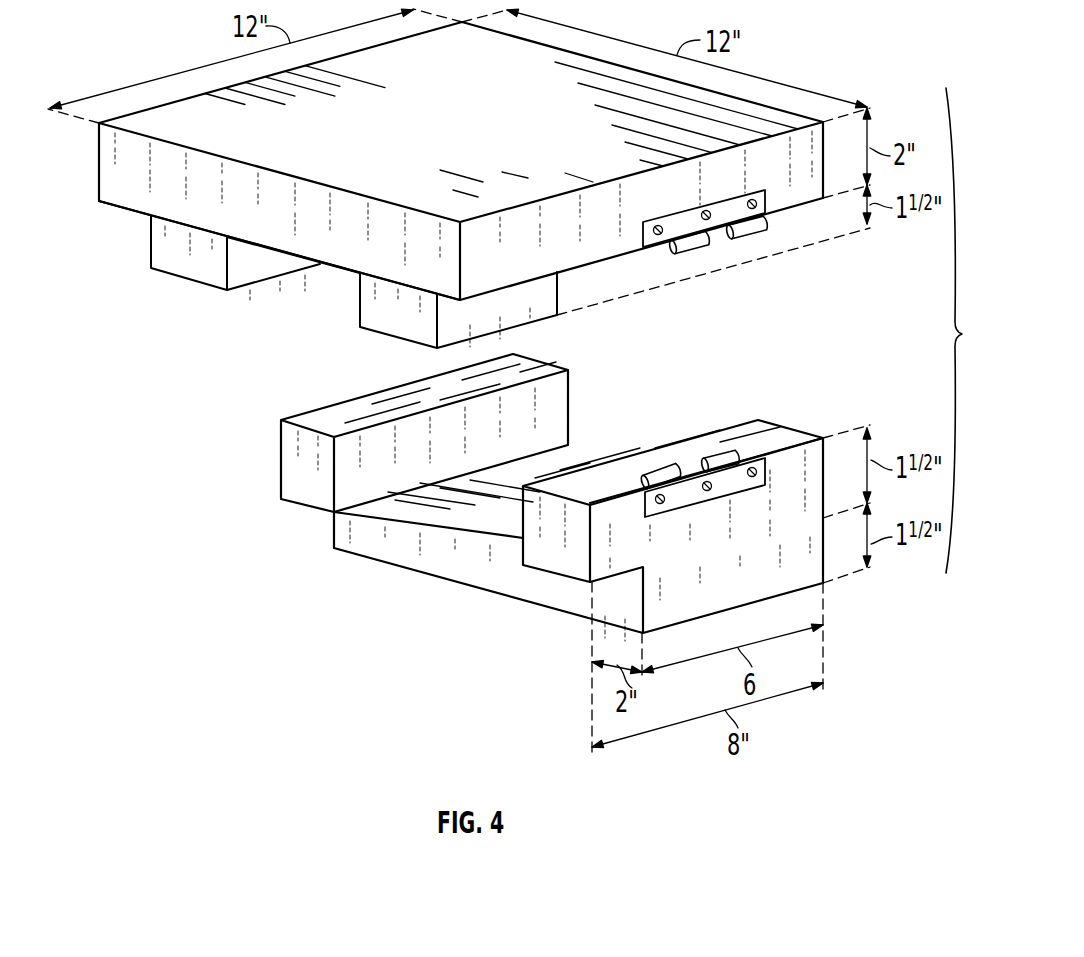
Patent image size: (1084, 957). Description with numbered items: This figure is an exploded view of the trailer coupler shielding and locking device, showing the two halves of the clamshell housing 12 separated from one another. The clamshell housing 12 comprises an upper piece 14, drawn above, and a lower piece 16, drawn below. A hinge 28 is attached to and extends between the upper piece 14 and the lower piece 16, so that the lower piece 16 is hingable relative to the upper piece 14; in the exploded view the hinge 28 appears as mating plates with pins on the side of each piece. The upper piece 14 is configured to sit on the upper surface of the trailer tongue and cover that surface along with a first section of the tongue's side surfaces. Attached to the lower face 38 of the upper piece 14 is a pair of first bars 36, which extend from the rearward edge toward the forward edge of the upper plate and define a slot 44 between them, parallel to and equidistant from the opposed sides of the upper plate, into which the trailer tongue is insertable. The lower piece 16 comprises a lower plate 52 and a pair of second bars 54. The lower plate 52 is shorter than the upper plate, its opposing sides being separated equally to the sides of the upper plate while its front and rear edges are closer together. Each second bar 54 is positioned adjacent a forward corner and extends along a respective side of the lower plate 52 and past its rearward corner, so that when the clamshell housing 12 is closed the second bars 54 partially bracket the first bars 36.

The clamshell housing 12 is at (833, 150).
The upper piece 14 is at (752, 100).
The lower piece 16 is at (871, 503).
The hinge 28 is at (693, 252).
The first bars 36 is at (188, 265).
The lower face 38 is at (128, 213).
The slot 44 is at (310, 303).
The lower plate 52 is at (430, 560).
The second bars 54 is at (290, 470).